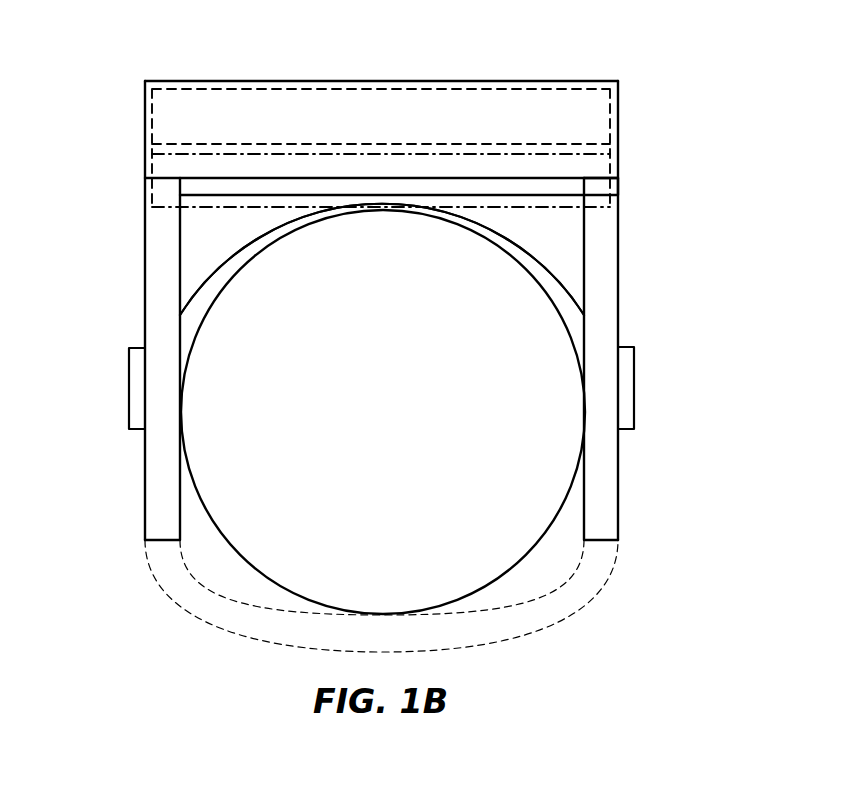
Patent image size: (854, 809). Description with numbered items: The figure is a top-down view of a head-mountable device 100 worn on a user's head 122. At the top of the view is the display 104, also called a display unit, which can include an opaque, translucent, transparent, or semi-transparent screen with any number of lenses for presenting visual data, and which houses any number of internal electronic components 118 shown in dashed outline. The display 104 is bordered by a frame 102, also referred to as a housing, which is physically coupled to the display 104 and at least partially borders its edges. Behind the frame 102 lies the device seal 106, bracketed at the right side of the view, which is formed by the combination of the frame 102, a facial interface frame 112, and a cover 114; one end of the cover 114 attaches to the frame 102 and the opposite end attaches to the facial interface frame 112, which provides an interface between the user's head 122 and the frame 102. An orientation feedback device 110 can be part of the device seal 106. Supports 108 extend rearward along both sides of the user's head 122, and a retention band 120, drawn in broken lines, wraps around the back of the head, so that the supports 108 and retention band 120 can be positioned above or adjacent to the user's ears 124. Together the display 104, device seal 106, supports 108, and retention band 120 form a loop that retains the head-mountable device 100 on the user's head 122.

The head-mountable device 100 is at (108, 109).
The frame 102 is at (178, 181).
The display 104 is at (618, 128).
The device seal 106 is at (697, 175).
The supports 108 is at (153, 475).
The orientation feedback device 110 is at (610, 190).
The facial interface frame 112 is at (548, 283).
The cover 114 is at (193, 257).
The internal electronic components 118 is at (508, 100).
The retention band 120 is at (214, 622).
The user's head 122 is at (403, 427).
The user's ears 124 is at (135, 383).